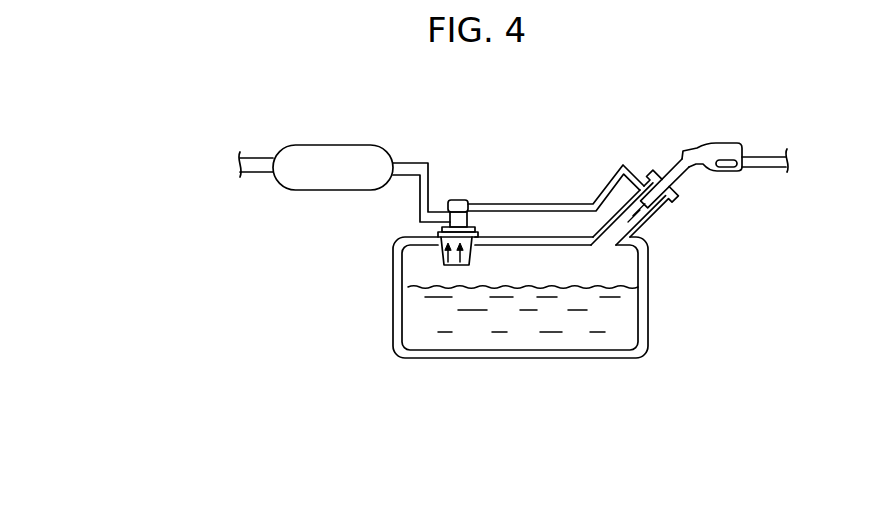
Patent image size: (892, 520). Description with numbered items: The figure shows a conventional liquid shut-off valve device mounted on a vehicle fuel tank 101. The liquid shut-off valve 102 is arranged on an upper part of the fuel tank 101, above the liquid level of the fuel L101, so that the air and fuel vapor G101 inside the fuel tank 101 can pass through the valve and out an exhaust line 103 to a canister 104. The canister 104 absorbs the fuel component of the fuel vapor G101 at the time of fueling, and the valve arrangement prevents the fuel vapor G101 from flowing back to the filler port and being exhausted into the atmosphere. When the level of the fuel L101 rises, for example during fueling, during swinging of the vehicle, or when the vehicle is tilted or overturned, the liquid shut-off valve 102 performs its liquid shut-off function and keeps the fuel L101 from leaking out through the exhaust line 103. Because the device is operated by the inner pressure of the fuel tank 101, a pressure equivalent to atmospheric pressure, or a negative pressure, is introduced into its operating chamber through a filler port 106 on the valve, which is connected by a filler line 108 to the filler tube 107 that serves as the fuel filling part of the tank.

The fuel tank 101 is at (650, 300).
The liquid shut-off valve 102 is at (447, 228).
The exhaust line 103 is at (425, 163).
The canister 104 is at (337, 145).
The filler port 106 is at (473, 198).
The filler tube 107 is at (662, 205).
The filler line 108 is at (573, 203).
The fuel vapor G101 is at (443, 266).
The fuel L101 is at (610, 342).